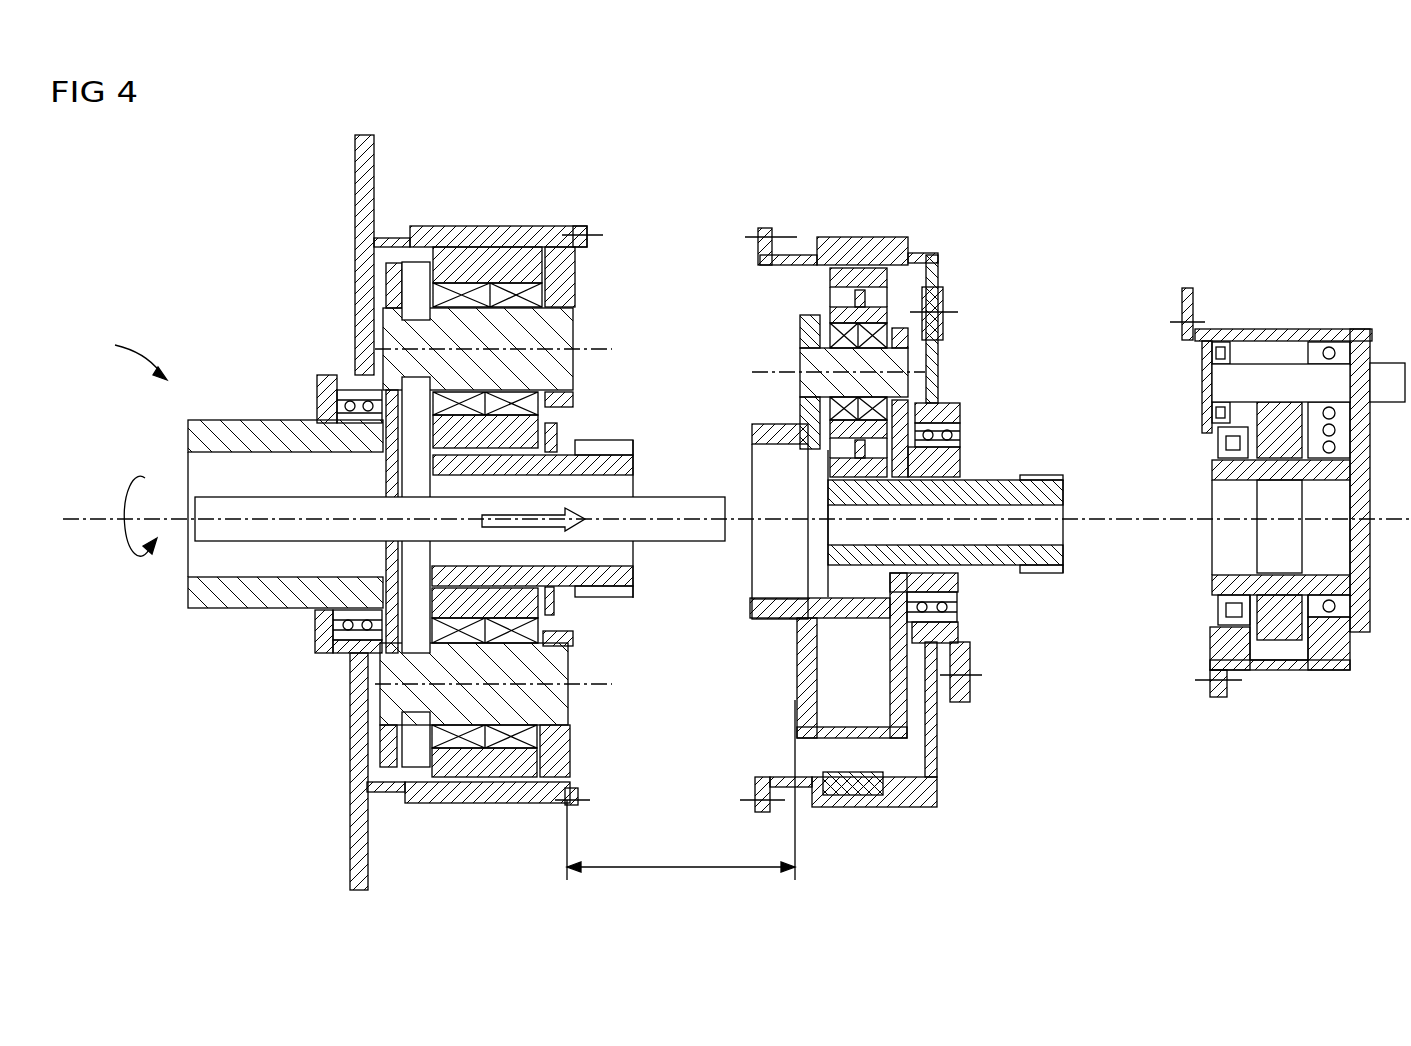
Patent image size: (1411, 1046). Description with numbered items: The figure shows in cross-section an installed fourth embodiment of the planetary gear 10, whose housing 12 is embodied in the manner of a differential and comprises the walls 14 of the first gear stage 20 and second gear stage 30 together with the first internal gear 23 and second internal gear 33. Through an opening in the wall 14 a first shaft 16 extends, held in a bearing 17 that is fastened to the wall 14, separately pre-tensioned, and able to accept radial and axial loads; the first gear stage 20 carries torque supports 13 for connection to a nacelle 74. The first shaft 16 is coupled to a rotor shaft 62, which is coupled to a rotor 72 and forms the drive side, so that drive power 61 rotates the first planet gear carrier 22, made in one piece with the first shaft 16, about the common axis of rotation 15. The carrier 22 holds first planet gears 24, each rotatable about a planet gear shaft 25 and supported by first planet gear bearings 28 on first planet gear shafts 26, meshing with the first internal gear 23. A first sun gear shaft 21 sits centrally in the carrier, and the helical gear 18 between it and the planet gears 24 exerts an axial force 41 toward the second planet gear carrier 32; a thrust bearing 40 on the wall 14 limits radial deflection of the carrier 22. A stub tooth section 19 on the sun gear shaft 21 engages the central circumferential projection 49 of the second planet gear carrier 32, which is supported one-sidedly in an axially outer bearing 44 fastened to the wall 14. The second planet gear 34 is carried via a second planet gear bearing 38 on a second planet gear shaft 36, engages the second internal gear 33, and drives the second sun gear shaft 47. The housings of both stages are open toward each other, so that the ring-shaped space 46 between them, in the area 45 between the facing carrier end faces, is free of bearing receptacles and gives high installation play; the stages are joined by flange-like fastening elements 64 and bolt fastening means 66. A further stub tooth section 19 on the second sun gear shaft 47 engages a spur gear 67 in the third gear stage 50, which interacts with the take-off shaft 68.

The planetary gear 10 is at (729, 503).
The housing 12 is at (606, 500).
The torque supports 13 is at (365, 192).
The wall 14 is at (425, 228).
The common axis of rotation 15 is at (78, 515).
The first shaft 16 is at (228, 420).
The bearing 17 is at (330, 400).
The helical gear 18 is at (460, 592).
The stub tooth section 19 is at (625, 445).
The first gear stage 20 is at (463, 477).
The first sun gear shaft 21 is at (617, 577).
The first planet gear carrier 22 is at (388, 748).
The first internal gear 23 is at (522, 240).
The first planet gears 24 is at (472, 253).
The planet gear shaft 25 is at (605, 345).
The first planet gear shafts 26 is at (405, 340).
The first planet gear bearings 28 is at (425, 295).
The second gear stage 30 is at (795, 504).
The second planet gear carrier 32 is at (853, 732).
The second internal gear 33 is at (858, 250).
The second planet gear 34 is at (880, 280).
The second planet gear shaft 36 is at (895, 360).
The second planet gear bearing 38 is at (895, 338).
The thrust bearing 40 is at (578, 256).
The axial force 41 is at (545, 540).
The axially outer bearing 44 is at (957, 430).
The area 45 is at (680, 873).
The space 46 is at (716, 705).
The second sun gear shaft 47 is at (1063, 550).
The central circumferential projection 49 is at (808, 615).
The third gear stage 50 is at (1300, 436).
The drive power 61 is at (137, 473).
The rotor shaft 62 is at (107, 353).
The fastening element 64 is at (903, 496).
The fastening means 66 is at (582, 228).
The spur gear 67 is at (1280, 633).
The take-off shaft 68 is at (1262, 370).
The rotor 72 is at (107, 353).
The nacelle 74 is at (88, 612).